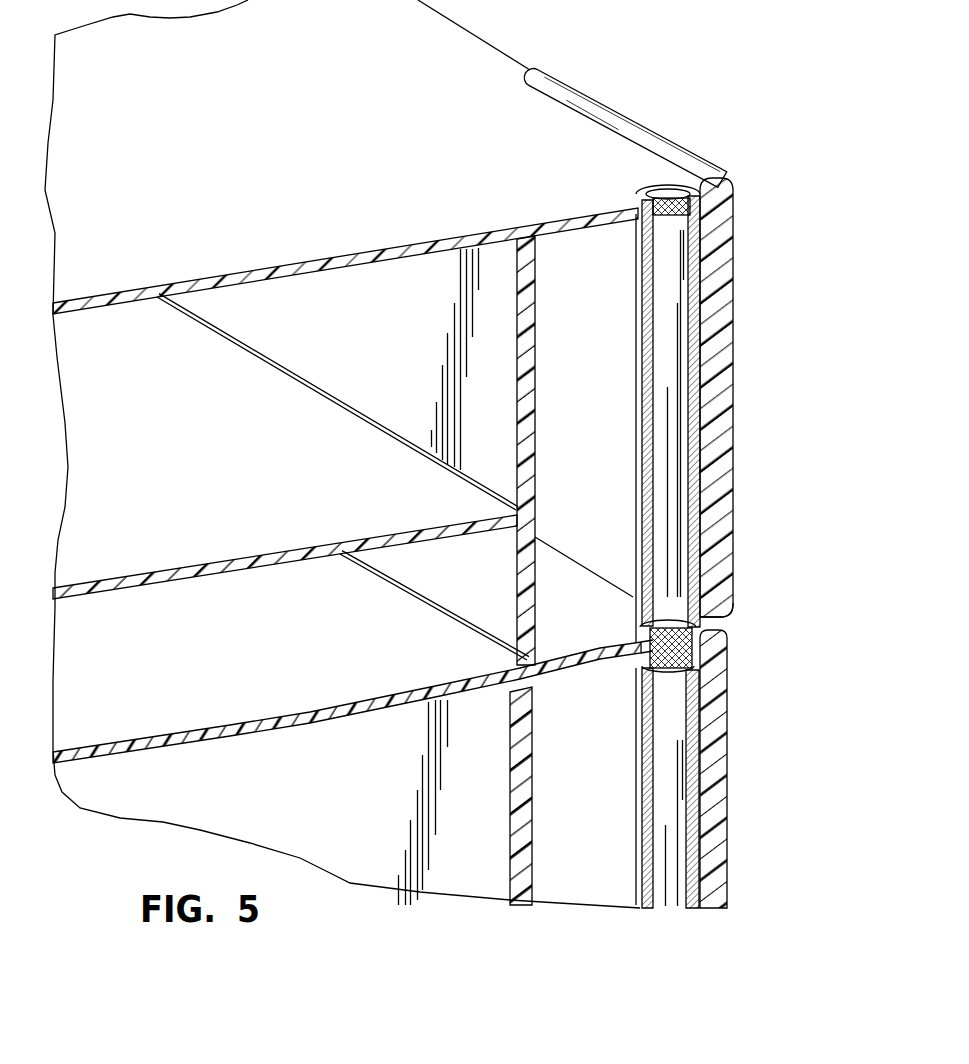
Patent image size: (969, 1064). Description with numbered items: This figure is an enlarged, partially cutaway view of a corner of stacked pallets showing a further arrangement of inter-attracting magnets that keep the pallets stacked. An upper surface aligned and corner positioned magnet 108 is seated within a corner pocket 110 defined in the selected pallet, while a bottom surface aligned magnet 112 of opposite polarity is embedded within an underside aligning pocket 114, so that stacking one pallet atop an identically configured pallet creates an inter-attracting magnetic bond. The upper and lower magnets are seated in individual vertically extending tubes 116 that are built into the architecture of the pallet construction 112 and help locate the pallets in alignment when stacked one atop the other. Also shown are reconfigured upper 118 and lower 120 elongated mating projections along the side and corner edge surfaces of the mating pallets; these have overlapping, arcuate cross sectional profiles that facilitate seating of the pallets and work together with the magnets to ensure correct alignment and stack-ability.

The upper surface aligned and corner positioned magnet 108 is at (668, 198).
The corner pocket 110 is at (646, 199).
The bottom surface aligned magnet 112 is at (329, 139).
The underside aligning pocket 114 is at (640, 642).
The vertically extending tubes 116 is at (700, 372).
The upper elongated and mating projection 118 is at (736, 184).
The lower elongated and mating projection 120 is at (707, 615).